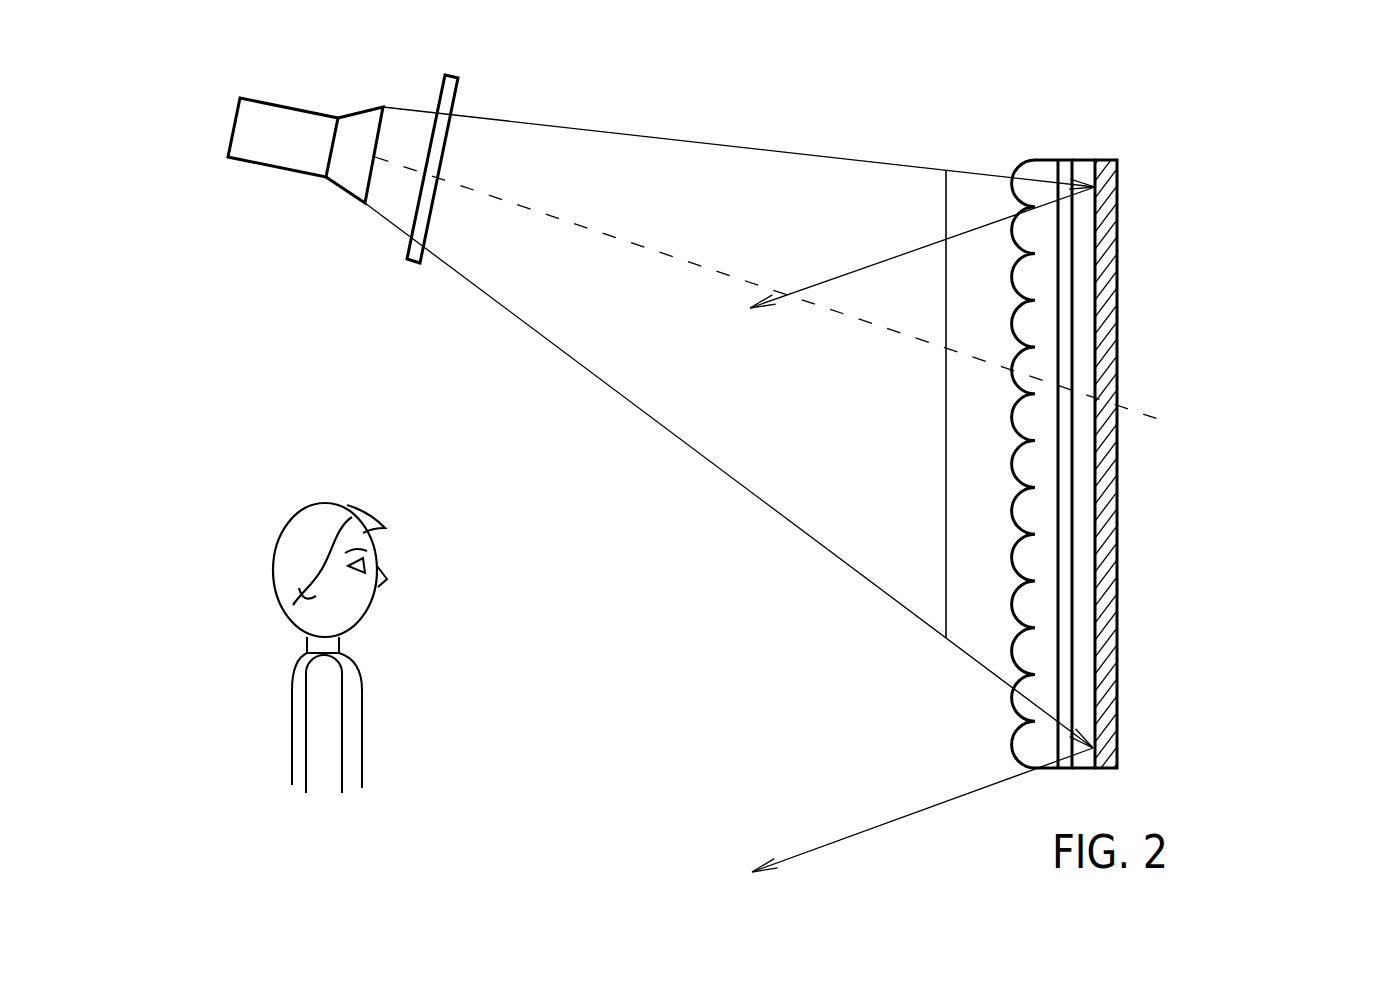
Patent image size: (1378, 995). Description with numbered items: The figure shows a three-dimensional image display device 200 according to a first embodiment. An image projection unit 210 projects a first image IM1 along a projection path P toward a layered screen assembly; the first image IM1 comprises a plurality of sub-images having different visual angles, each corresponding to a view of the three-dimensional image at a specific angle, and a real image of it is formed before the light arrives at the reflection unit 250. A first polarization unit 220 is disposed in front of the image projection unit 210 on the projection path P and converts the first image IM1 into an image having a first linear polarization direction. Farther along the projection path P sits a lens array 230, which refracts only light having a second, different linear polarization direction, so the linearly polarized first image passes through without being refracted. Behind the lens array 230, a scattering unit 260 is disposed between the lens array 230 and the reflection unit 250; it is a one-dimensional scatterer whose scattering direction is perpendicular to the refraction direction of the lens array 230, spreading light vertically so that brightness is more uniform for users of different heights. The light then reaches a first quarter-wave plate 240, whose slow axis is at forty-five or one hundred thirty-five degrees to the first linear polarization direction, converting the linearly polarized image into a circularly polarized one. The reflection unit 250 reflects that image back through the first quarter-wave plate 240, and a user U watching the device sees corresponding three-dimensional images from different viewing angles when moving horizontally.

The 3D image display device 200 is at (1202, 160).
The image projection unit 210 is at (263, 98).
The first polarization unit 220 is at (457, 73).
The lens array 230 is at (1033, 168).
The first quarter-wave plate 240 is at (1085, 168).
The reflection unit 250 is at (1117, 165).
The scattering unit 260 is at (1065, 168).
The first image IM1 is at (946, 168).
The projection path P is at (597, 188).
The user U is at (293, 532).